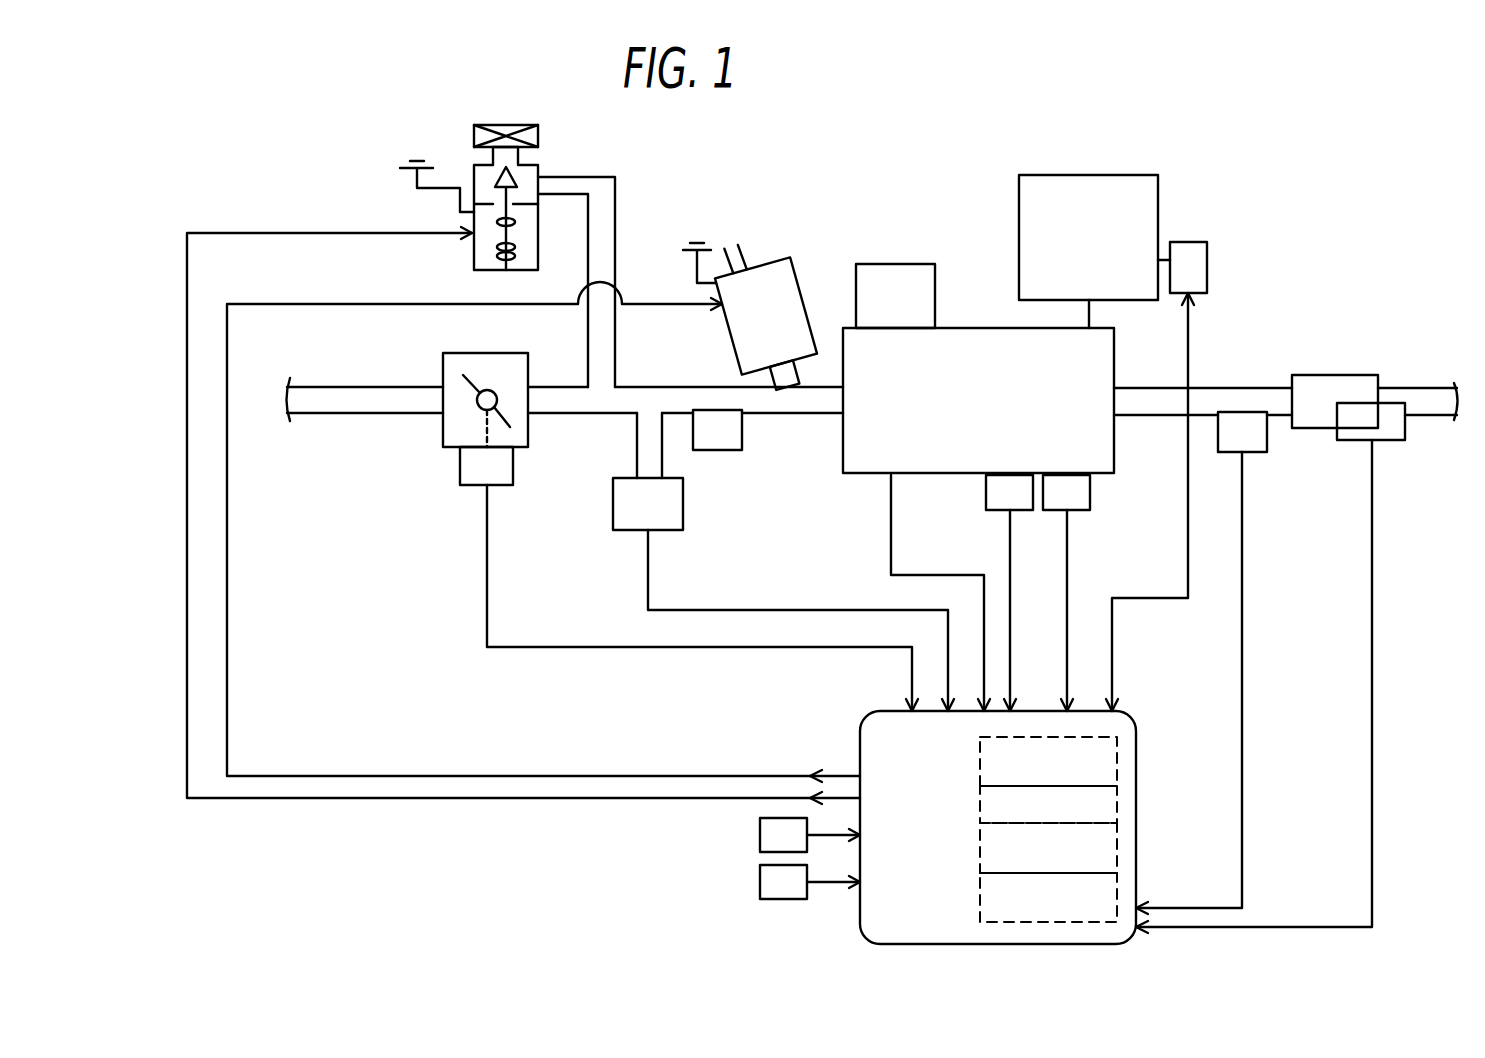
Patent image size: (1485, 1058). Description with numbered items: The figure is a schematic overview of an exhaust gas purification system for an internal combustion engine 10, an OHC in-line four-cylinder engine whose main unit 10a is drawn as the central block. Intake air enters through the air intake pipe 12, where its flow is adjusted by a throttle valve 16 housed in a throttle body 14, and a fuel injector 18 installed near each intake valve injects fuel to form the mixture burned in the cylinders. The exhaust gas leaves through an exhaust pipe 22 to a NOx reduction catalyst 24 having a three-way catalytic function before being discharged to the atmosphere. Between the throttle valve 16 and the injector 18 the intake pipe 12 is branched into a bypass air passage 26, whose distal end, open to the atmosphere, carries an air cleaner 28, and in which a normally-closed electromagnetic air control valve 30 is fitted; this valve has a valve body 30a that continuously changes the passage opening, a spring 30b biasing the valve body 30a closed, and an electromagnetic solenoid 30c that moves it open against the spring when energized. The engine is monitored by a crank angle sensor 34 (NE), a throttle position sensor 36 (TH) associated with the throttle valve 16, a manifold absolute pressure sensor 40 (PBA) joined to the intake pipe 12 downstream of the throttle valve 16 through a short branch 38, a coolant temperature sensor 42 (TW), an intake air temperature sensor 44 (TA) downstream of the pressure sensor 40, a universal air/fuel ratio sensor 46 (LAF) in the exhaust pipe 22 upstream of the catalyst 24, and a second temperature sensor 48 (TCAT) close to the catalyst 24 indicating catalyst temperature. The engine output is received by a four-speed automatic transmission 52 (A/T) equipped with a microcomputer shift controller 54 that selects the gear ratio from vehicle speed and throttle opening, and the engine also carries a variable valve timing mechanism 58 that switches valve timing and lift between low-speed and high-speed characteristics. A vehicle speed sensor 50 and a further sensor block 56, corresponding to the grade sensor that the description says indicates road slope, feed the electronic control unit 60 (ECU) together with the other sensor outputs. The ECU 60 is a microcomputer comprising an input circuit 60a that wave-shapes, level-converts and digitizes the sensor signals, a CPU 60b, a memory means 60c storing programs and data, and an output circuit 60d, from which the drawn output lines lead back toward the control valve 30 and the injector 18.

The internal combustion engine 10 is at (969, 229).
The main unit of the engine 10a is at (860, 475).
The air intake pipe 12 is at (648, 386).
The throttle body 14 is at (528, 371).
The throttle valve 16 is at (463, 375).
The fuel injector 18 is at (800, 290).
The exhaust pipe 22 is at (1235, 387).
The NOx reduction catalyst 24 is at (1333, 375).
The bypass air passage 26 is at (617, 205).
The air cleaner 28 is at (540, 136).
The electromagnetic air control valve 30 is at (470, 177).
The valve body 30a is at (518, 179).
The spring 30b is at (516, 257).
The electromagnetic solenoid 30c is at (516, 222).
The crank angle sensor 34 is at (1090, 500).
The throttle position sensor 36 is at (513, 472).
The pressure passage 38 is at (662, 466).
The manifold absolute pressure sensor 40 is at (665, 530).
The coolant temperature sensor 42 is at (986, 503).
The intake air temperature sensor 44 is at (742, 432).
The universal air/fuel ratio sensor 46 is at (1255, 452).
The second temperature sensor 48 is at (1352, 440).
The vehicle speed sensor 50 is at (760, 833).
The automatic transmission 52 is at (1158, 207).
The shift controller 54 is at (1207, 265).
The sensor 56 is at (760, 881).
The variable valve timing mechanism 58 is at (878, 264).
The electronic control unit 60 is at (860, 740).
The input circuit 60a is at (1117, 757).
The CPU 60b is at (1117, 801).
The memory means 60c is at (1117, 845).
The output circuit 60d is at (1117, 885).